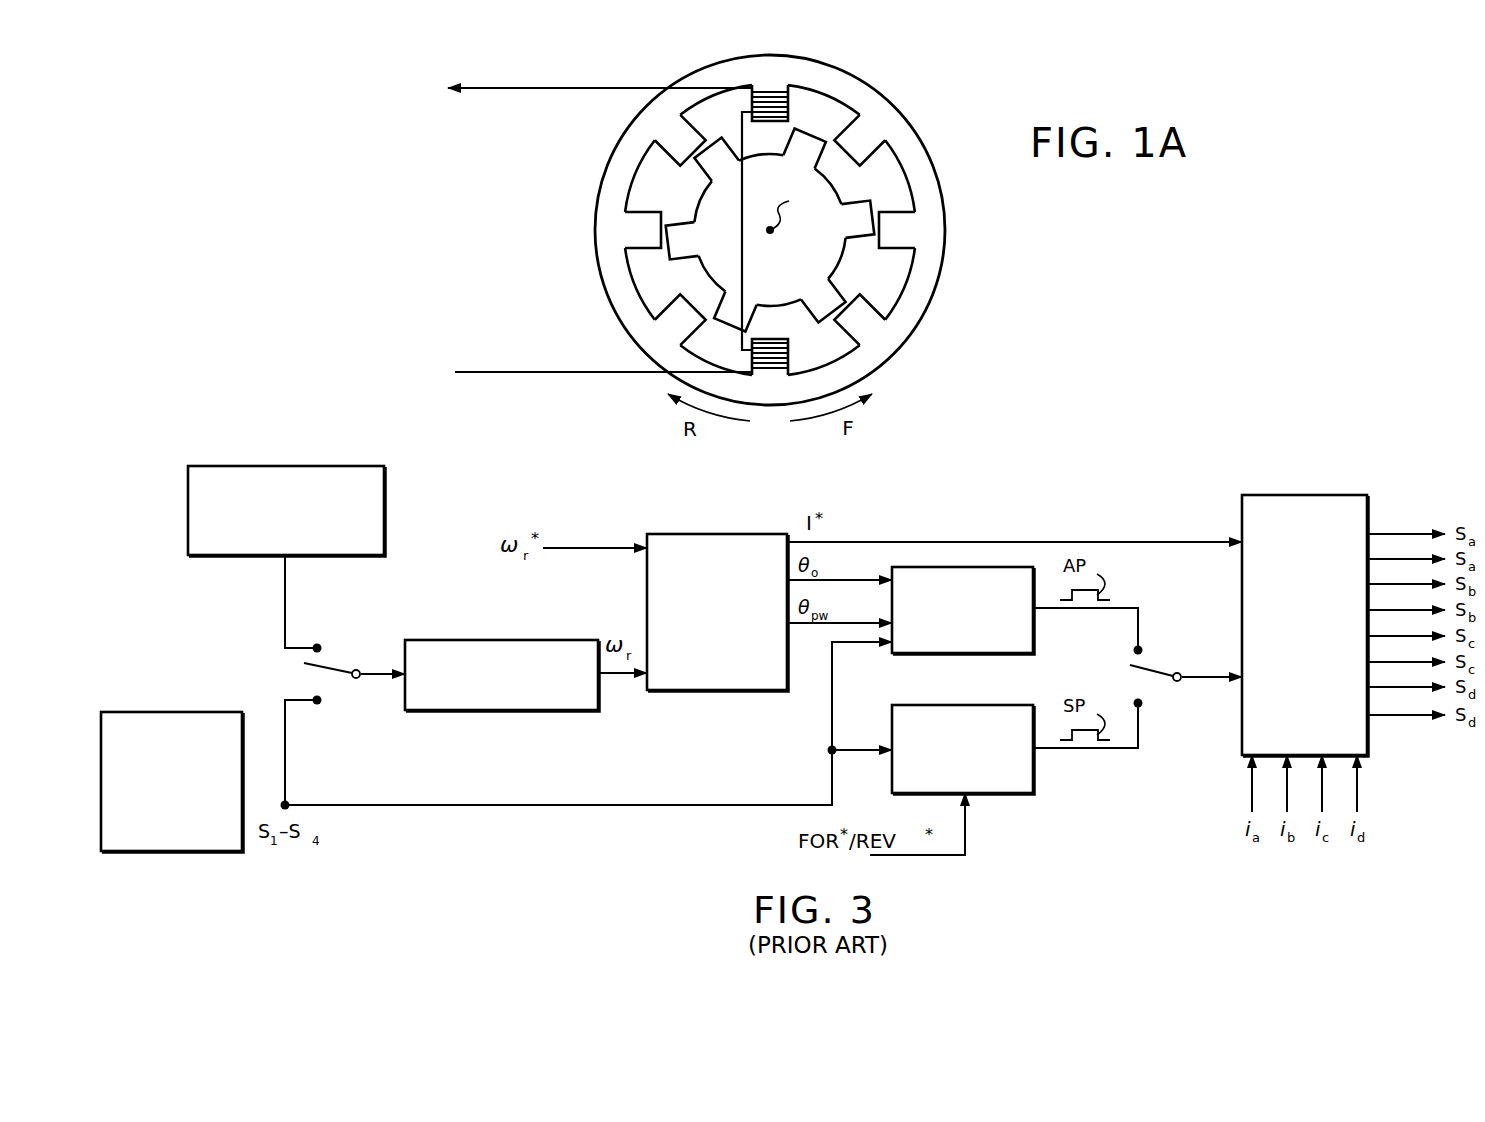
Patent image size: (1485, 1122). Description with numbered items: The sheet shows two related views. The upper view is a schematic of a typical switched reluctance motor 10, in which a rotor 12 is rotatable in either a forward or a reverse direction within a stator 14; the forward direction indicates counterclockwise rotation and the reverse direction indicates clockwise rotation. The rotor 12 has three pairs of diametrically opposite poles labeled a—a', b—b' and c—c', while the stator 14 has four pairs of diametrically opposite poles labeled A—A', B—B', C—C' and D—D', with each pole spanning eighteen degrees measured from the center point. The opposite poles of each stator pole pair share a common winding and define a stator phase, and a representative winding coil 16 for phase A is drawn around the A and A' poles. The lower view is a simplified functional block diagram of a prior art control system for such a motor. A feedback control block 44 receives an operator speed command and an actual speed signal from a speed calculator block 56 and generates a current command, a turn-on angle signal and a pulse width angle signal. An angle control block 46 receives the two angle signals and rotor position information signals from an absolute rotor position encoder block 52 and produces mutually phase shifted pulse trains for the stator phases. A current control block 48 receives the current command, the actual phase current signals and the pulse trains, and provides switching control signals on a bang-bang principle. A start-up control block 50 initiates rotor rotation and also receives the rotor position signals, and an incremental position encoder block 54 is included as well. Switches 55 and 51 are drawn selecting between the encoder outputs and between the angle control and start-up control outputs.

In FIG. 1A, the switched reluctance motor 10 is at (978, 368).
In FIG. 1A, the rotor 12 is at (830, 251).
In FIG. 1A, the stator 14 is at (947, 242).
In FIG. 1A, the winding coil 16 is at (790, 105).
In FIG. 3, the feedback control block 44 is at (677, 535).
In FIG. 3, the angle control block 46 is at (963, 653).
In FIG. 3, the current control block 48 is at (1305, 495).
In FIG. 3, the start-up control block 50 is at (1020, 793).
In FIG. 3, the switch 51 is at (1152, 678).
In FIG. 3, the absolute rotor position encoder block 52 is at (188, 710).
In FIG. 3, the incremental position encoder block 54 is at (255, 466).
In FIG. 3, the switch 55 is at (332, 667).
In FIG. 3, the speed calculator block 56 is at (543, 640).